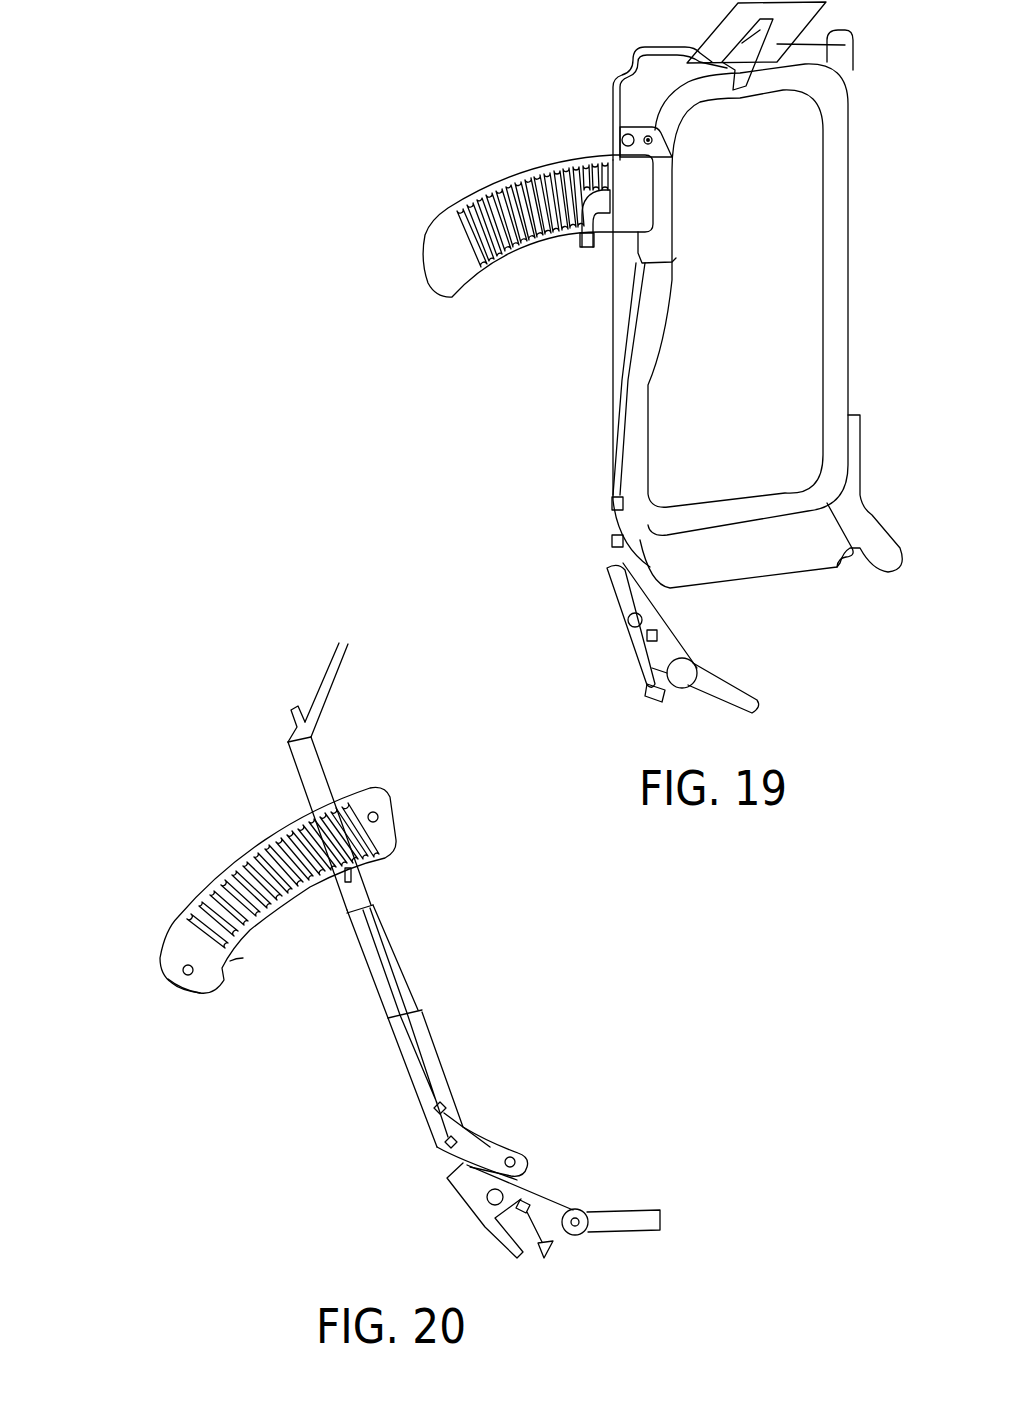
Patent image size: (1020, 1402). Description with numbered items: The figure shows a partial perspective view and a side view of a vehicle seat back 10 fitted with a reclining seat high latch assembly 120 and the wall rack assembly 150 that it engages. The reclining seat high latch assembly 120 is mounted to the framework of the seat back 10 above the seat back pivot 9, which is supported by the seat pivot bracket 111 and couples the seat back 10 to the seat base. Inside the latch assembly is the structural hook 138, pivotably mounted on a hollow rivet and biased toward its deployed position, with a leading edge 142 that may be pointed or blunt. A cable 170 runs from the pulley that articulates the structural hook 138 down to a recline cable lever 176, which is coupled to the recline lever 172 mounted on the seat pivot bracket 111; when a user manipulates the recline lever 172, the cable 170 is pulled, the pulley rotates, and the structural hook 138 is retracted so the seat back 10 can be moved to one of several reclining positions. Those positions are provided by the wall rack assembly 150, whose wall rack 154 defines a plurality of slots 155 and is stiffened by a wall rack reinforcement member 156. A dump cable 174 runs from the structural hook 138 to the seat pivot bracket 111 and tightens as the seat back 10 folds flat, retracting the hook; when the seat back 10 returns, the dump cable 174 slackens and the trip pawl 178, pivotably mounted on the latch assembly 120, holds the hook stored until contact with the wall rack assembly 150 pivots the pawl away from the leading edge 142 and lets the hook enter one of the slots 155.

In FIG. 19, the seat back 10 is at (840, 143).
In FIG. 20, the seat back 10 is at (388, 940).
In FIG. 19, the reclining seat high latch assembly 120 is at (598, 131).
In FIG. 20, the reclining seat high latch assembly 120 is at (338, 776).
In FIG. 19, the wall rack assembly 150 is at (457, 202).
In FIG. 20, the wall rack assembly 150 is at (216, 860).
In FIG. 19, the slots 155 is at (577, 167).
In FIG. 20, the slots 155 is at (284, 825).
In FIG. 19, the structural hook 138 is at (580, 236).
In FIG. 19, the leading edge 142 is at (588, 248).
In FIG. 19, the dump cable 174 is at (611, 515).
In FIG. 20, the dump cable 174 is at (468, 1125).
In FIG. 19, the cable 170 is at (647, 660).
In FIG. 20, the cable 170 is at (408, 1068).
In FIG. 19, the seat back pivot 9 is at (623, 618).
In FIG. 20, the seat back pivot 9 is at (480, 1200).
In FIG. 19, the seat pivot bracket 111 is at (659, 631).
In FIG. 19, the recline lever 172 is at (733, 683).
In FIG. 20, the recline lever 172 is at (625, 1213).
In FIG. 19, the recline cable lever 176 is at (661, 693).
In FIG. 20, the recline cable lever 176 is at (560, 1245).
In FIG. 20, the trip pawl 178 is at (288, 783).
In FIG. 20, the wall rack 154 is at (187, 915).
In FIG. 20, the wall rack reinforcement member 156 is at (237, 964).